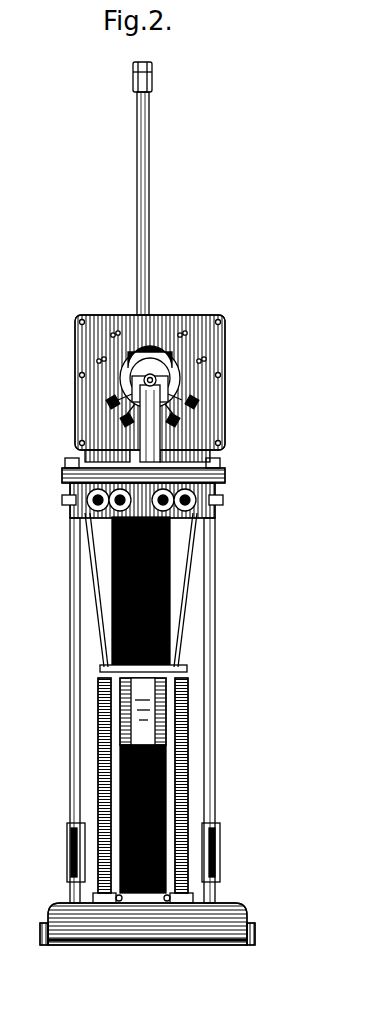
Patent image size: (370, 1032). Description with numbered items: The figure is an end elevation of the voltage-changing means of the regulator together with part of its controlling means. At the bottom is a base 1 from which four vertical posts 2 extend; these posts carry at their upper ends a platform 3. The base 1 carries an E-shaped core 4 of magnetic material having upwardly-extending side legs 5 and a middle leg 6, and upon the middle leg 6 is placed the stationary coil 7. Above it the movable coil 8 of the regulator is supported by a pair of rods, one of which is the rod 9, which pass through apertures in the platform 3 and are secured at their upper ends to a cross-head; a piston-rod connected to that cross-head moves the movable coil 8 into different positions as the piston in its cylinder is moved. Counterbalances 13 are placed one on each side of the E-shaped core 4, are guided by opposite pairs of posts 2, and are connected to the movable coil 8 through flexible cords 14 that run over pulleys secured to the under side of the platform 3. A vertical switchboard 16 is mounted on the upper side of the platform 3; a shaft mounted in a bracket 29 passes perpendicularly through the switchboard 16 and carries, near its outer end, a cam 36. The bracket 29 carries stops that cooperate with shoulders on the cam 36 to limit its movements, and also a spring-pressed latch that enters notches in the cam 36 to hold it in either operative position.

The base 1 is at (222, 921).
The vertical posts 2 is at (70, 605).
The platform 3 is at (222, 475).
The E-shaped core 4 is at (166, 716).
The side legs 5 is at (98, 690).
The middle leg 6 is at (131, 715).
The stationary coil 7 is at (166, 797).
The movable coil 8 is at (170, 597).
The rod 9 is at (148, 246).
The counterbalances 13 is at (67, 853).
The flexible cords 14 is at (100, 624).
The switchboard 16 is at (213, 367).
The bracket 29 is at (152, 430).
The cam 36 is at (165, 362).